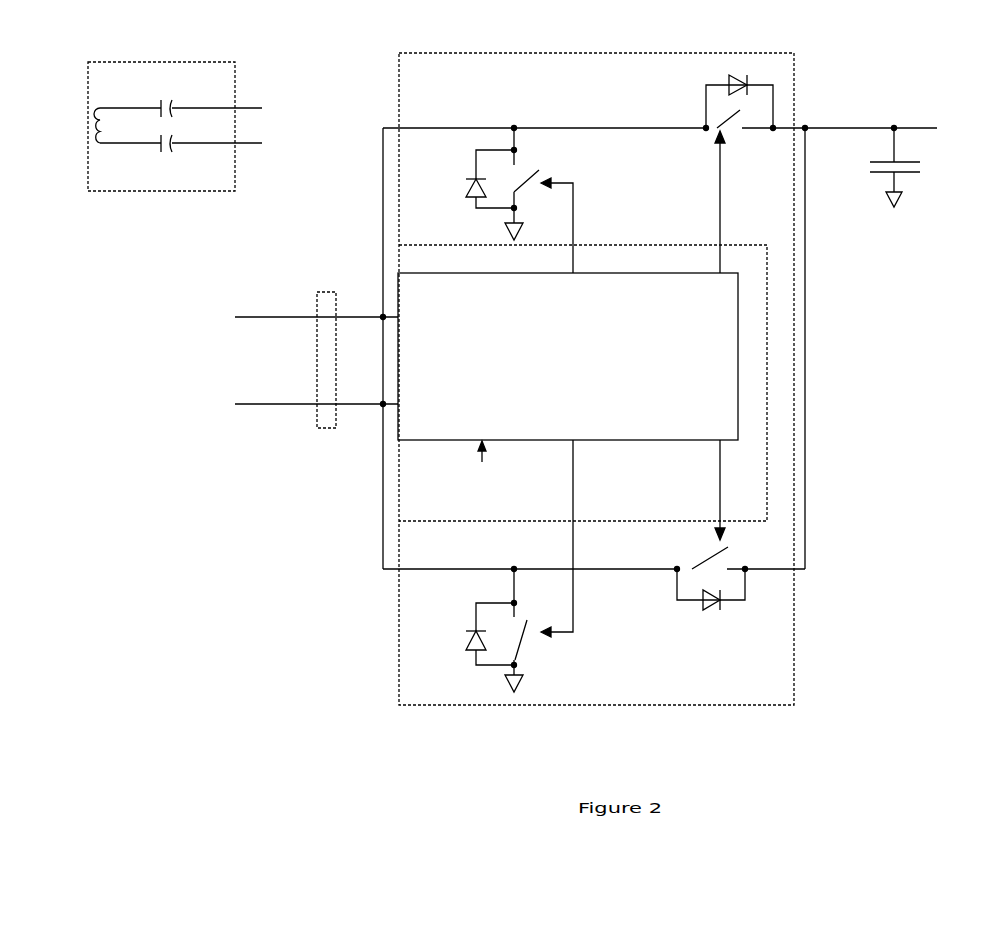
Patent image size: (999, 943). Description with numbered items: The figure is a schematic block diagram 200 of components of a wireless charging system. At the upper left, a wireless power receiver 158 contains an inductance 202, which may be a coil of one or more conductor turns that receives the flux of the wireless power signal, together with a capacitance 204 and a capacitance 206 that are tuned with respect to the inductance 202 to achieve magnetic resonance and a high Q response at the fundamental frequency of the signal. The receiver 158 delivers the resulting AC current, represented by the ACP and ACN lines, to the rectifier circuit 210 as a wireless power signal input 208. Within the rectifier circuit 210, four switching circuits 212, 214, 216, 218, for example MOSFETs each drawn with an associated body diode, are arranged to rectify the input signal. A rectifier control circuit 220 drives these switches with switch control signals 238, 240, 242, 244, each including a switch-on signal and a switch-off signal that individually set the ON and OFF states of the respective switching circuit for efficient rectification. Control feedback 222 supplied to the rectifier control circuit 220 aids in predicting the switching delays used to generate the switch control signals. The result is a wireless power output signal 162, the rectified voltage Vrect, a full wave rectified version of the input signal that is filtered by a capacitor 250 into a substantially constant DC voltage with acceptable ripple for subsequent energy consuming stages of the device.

The schematic block diagram 200 is at (311, 61).
The wireless power receiver 158 is at (121, 83).
The inductance 202 is at (100, 143).
The capacitance 204 is at (172, 104).
The capacitance 206 is at (172, 148).
The wireless power signal input 208 is at (325, 428).
The rectifier circuit 210 is at (432, 78).
The switching circuit 212 is at (532, 201).
The switching circuit 214 is at (742, 152).
The switching circuit 216 is at (743, 551).
The switching circuit 218 is at (532, 661).
The rectifier control circuit 220 is at (556, 376).
The control feedback 222 is at (483, 473).
The switch control signal 238 is at (573, 222).
The switch control signal 240 is at (720, 208).
The switch control signal 242 is at (573, 497).
The switch control signal 244 is at (720, 470).
The wireless power output signal 162 is at (925, 128).
The capacitor 250 is at (928, 178).